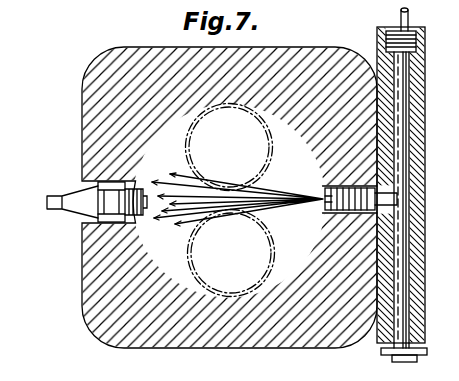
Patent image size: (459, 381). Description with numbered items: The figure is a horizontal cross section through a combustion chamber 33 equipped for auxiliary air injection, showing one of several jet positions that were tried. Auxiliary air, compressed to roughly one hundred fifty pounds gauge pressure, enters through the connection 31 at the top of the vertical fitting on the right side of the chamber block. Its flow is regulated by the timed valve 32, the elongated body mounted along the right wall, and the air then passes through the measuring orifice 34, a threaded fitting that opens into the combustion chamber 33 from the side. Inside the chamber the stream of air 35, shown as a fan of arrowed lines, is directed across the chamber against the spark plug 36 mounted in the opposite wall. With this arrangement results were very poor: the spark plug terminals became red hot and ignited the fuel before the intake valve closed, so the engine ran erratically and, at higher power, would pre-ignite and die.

The connection 31 is at (409, 12).
The timed valve 32 is at (407, 315).
The combustion chamber 33 is at (178, 268).
The measuring orifice 34 is at (355, 185).
The stream of air 35 is at (267, 203).
The spark plug 36 is at (104, 232).